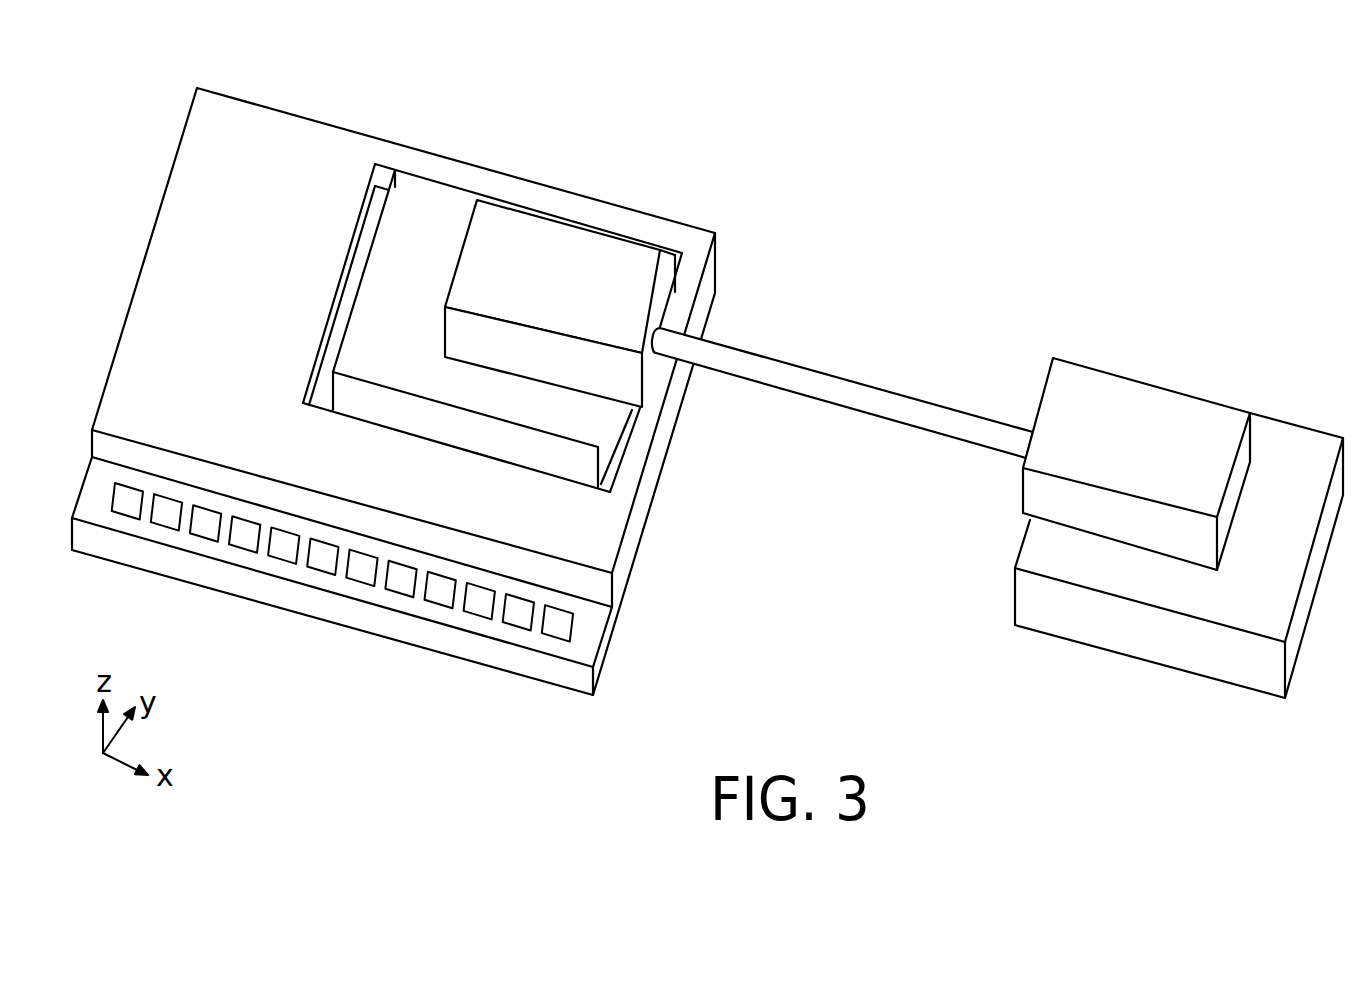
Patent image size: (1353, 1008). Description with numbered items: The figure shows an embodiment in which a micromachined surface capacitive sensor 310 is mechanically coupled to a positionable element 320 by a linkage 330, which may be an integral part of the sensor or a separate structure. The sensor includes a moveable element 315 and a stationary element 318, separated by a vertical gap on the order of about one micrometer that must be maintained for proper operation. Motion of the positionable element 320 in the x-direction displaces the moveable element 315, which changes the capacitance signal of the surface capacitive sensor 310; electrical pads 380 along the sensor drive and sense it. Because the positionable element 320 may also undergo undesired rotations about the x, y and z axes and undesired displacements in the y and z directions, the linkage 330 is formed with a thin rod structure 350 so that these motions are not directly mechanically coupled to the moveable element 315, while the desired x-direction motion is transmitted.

The micromachined surface capacitive sensor 310 is at (388, 368).
The moveable element 315 is at (430, 200).
The stationary element 318 is at (288, 145).
The positionable element 320 is at (1290, 452).
The linkage 330 is at (853, 279).
The thin rod structure 350 is at (863, 392).
The electrical pads 380 is at (282, 547).